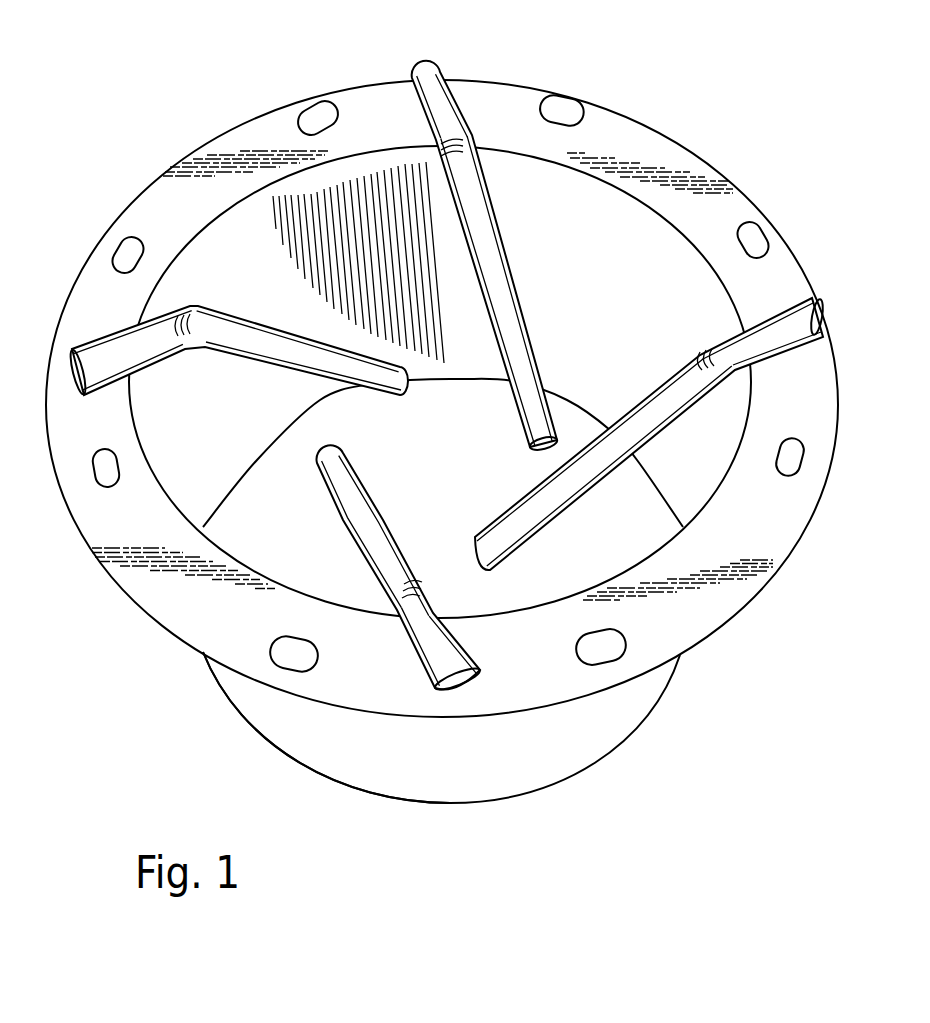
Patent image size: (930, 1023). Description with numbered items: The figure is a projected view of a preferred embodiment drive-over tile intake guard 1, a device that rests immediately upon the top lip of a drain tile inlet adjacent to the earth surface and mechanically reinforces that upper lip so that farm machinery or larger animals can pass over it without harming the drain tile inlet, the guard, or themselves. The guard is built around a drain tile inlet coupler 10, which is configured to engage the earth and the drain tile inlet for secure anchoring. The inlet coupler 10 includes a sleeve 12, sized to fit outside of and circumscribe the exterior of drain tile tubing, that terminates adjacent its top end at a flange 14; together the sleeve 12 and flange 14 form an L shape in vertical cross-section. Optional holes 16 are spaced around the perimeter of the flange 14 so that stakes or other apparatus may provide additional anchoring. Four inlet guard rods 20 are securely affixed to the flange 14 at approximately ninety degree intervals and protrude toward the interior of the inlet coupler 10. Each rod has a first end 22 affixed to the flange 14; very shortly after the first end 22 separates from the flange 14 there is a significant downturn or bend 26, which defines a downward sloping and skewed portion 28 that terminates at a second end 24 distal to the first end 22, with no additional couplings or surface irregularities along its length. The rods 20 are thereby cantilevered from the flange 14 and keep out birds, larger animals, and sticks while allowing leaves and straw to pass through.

The drive-over tile intake guard 1 is at (438, 435).
The drain tile inlet coupler 10 is at (643, 728).
The sleeve 12 is at (347, 775).
The flange 14 is at (655, 128).
The optional holes 16 is at (565, 105).
The inlet guard rods 20 is at (408, 68).
The first end 22 is at (452, 108).
The second end 24 is at (487, 573).
The bend 26 is at (476, 146).
The downward sloping and skewed portion 28 is at (248, 327).